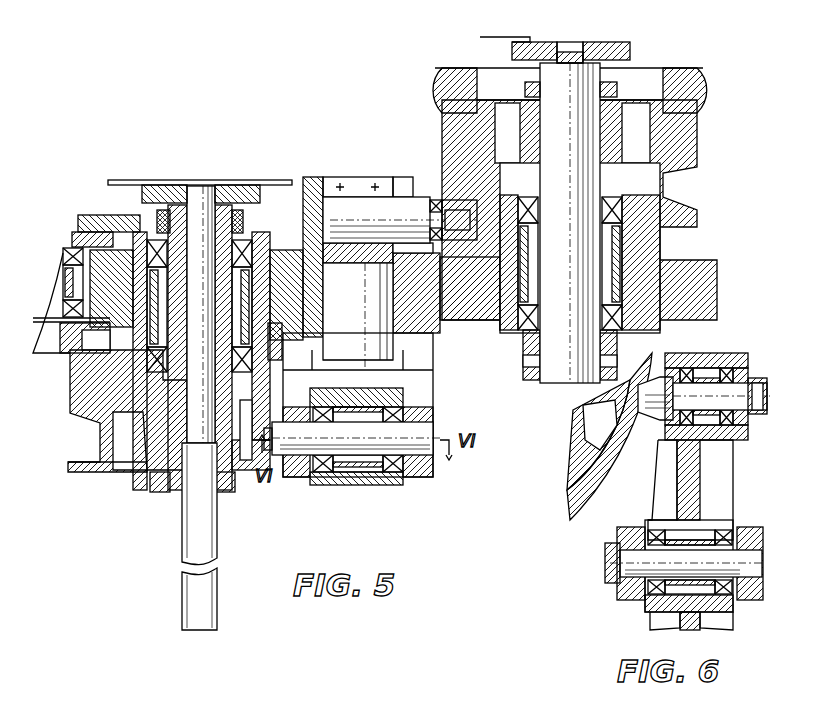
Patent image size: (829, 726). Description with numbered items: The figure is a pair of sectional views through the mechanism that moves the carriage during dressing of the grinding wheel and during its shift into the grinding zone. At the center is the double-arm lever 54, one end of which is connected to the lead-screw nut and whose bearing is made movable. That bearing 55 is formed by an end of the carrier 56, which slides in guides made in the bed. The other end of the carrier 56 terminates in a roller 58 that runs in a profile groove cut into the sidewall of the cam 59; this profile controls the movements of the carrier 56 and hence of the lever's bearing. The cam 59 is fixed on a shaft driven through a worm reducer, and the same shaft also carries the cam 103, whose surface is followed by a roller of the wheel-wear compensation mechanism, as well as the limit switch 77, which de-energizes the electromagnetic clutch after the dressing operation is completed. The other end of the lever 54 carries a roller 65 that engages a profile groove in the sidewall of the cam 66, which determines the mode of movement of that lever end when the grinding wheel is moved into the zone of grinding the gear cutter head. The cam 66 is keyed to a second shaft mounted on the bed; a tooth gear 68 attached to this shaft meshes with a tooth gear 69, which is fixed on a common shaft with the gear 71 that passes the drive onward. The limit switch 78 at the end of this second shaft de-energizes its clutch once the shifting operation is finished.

In FIG. 5, the double-arm lever 54 is at (375, 477).
In FIG. 6, the double-arm lever 54 is at (695, 492).
In FIG. 5, the bearing 55 is at (432, 427).
In FIG. 6, the bearing 55 is at (768, 545).
In FIG. 5, the carrier 56 is at (390, 343).
In FIG. 5, the roller 58 is at (440, 190).
In FIG. 5, the cam 59 is at (445, 150).
In FIG. 6, the roller 65 is at (650, 415).
In FIG. 5, the cam 66 is at (100, 470).
In FIG. 6, the cam 66 is at (577, 502).
In FIG. 5, the tooth gear 68 is at (80, 362).
In FIG. 5, the tooth gear 69 is at (53, 337).
In FIG. 5, the gear 71 is at (90, 216).
In FIG. 5, the limit switch 77 is at (593, 43).
In FIG. 5, the limit switch 78 is at (125, 181).
In FIG. 5, the cam 103 is at (525, 354).